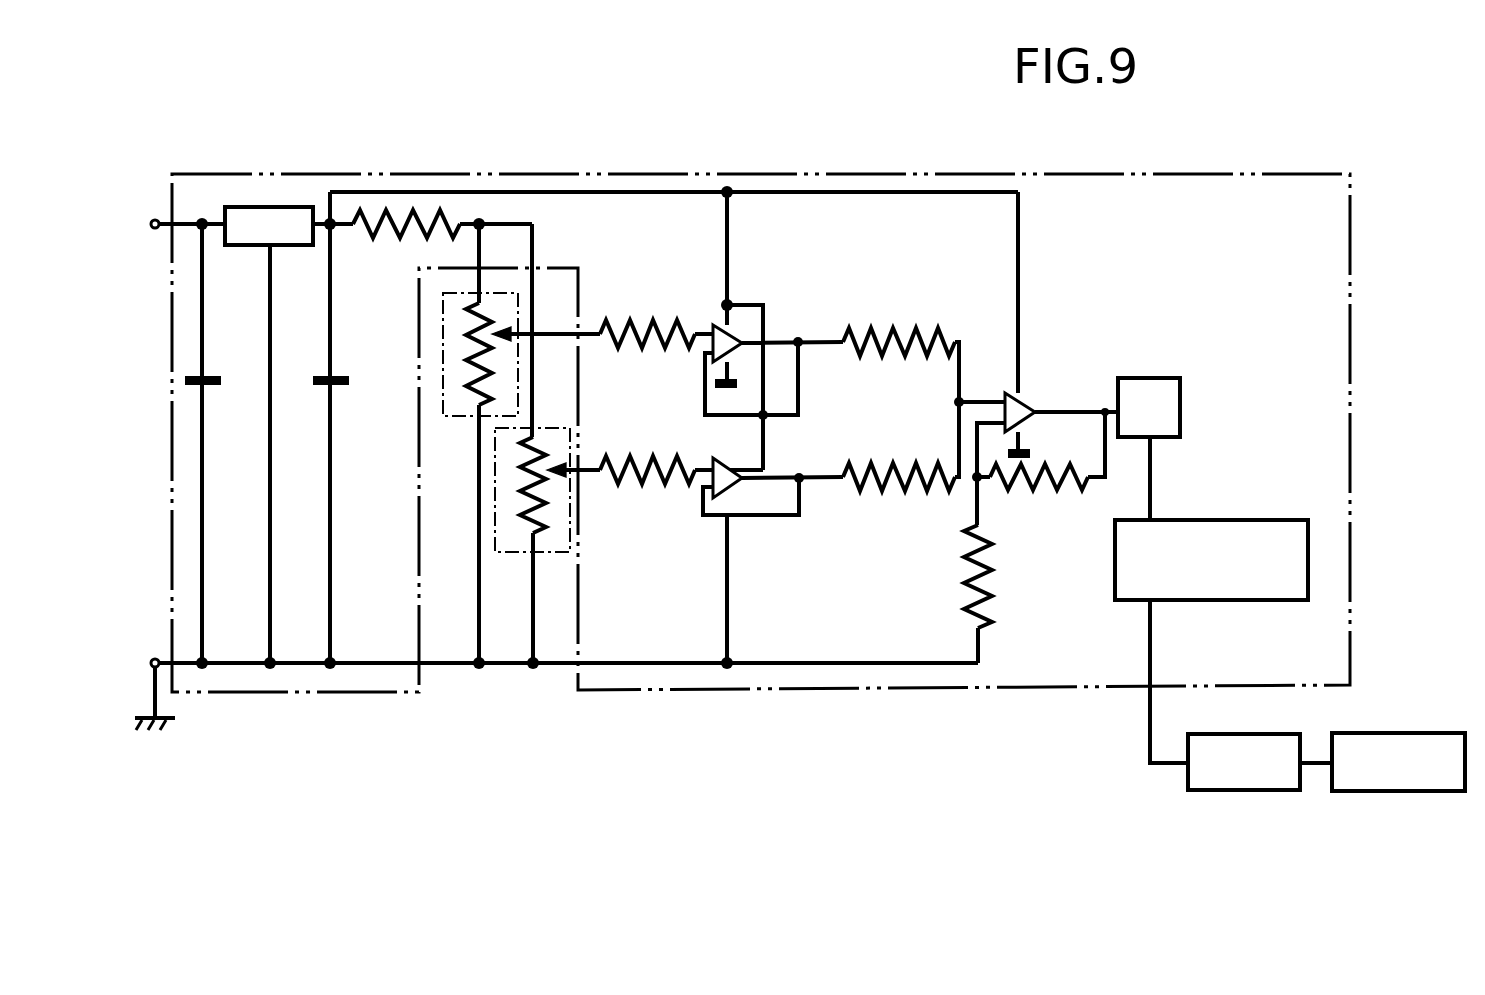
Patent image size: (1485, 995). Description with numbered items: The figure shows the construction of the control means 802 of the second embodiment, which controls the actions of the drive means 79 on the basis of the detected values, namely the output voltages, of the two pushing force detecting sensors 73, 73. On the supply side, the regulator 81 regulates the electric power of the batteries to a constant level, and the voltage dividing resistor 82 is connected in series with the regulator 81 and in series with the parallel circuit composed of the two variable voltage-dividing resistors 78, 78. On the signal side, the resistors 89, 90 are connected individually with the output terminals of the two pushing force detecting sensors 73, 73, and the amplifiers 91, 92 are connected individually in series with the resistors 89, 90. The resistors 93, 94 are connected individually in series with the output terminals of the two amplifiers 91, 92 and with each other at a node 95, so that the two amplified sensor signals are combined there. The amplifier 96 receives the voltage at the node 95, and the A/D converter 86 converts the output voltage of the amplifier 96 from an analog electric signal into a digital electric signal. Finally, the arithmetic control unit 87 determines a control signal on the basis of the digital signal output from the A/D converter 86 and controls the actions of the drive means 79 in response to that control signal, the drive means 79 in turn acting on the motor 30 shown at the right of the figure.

The control means 802 is at (807, 170).
The regulator 81 is at (302, 207).
The voltage dividing resistor 82 is at (397, 210).
The variable voltage-dividing resistor 78 is at (483, 342).
The pushing force detecting sensor 73 is at (441, 360).
The resistor 89 is at (677, 345).
The resistor 90 is at (678, 472).
The amplifier 91 is at (712, 330).
The amplifier 92 is at (735, 468).
The resistor 93 is at (868, 330).
The node 95 is at (959, 402).
The amplifier 96 is at (1027, 400).
The resistor 94 is at (972, 558).
The A/D converter 86 is at (1163, 377).
The arithmetic control unit 87 is at (1210, 518).
The drive means 79 is at (1262, 740).
The motor 30 is at (1365, 733).